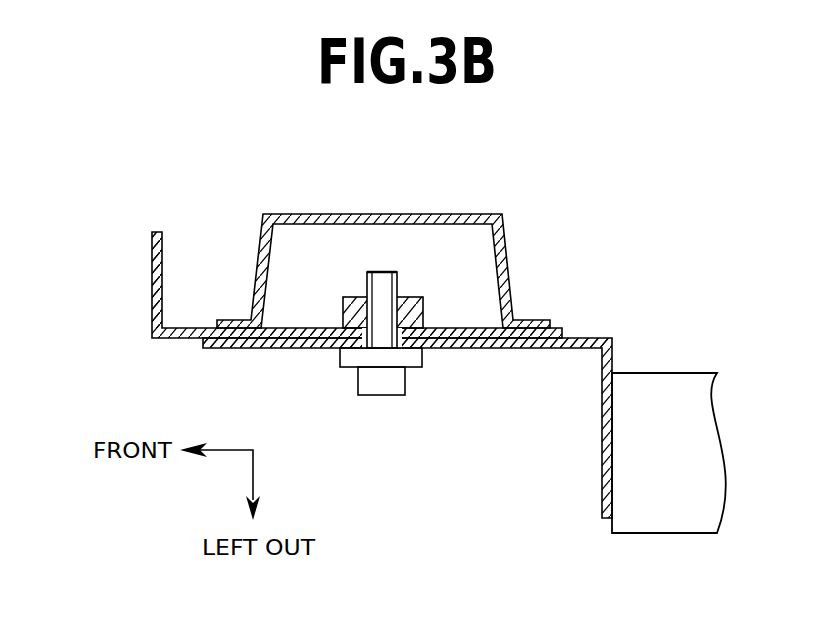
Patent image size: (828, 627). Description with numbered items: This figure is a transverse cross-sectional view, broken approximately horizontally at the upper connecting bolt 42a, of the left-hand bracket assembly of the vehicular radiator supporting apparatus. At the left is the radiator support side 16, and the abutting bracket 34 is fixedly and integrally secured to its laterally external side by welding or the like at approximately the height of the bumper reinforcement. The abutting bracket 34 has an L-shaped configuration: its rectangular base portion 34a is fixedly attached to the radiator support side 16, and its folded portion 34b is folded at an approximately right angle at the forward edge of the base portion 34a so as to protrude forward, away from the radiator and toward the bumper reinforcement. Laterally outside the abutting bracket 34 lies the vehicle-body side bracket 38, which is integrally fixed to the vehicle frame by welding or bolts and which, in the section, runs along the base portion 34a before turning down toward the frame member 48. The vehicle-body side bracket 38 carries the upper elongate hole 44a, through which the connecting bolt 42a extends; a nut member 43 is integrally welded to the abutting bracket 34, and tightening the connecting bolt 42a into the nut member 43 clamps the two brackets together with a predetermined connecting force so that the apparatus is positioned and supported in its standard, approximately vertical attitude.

The radiator support side 16 is at (421, 222).
The abutting bracket 34 is at (186, 272).
The base portion 34a is at (303, 328).
The folded portion 34b is at (150, 265).
The vehicle-body side bracket 38 is at (630, 341).
The connecting bolt 42a is at (382, 358).
The nut member 43 is at (362, 297).
The elongate hole 44a is at (463, 345).
The frame member 48 is at (652, 510).